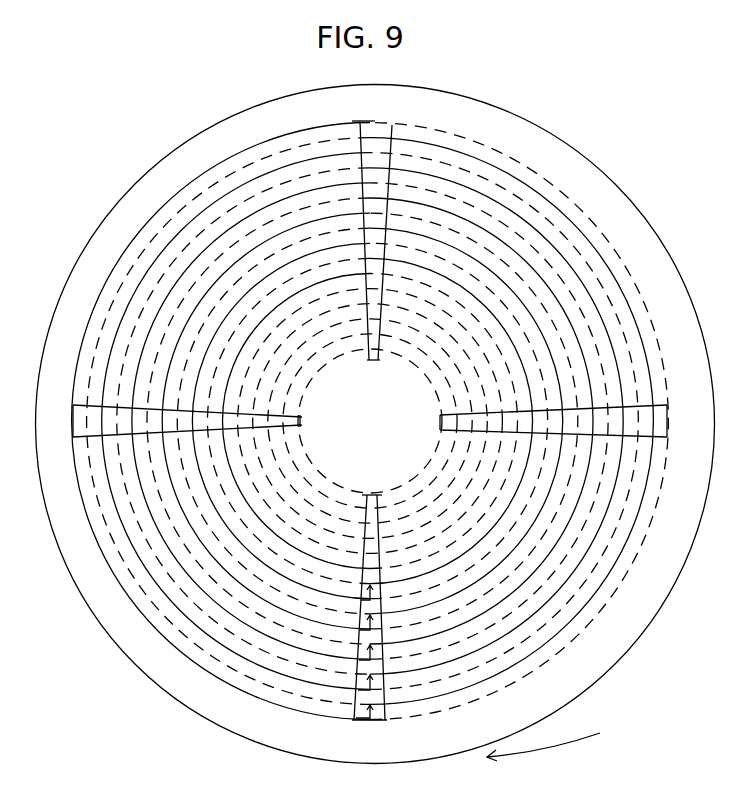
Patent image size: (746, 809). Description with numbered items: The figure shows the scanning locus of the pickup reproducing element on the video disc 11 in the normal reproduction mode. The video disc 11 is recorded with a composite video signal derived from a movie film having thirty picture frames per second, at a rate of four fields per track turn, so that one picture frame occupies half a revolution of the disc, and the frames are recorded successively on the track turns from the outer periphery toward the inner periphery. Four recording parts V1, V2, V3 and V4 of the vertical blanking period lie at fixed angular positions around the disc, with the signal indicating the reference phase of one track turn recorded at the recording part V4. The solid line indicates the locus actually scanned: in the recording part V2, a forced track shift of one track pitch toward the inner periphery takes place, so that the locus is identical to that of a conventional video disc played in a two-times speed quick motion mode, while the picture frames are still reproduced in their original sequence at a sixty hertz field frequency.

The video disc 11 is at (194, 137).
The recording part of the vertical blanking period V1 is at (68, 400).
The recording part of the vertical blanking period V2 is at (348, 726).
The recording part of the vertical blanking period V3 is at (672, 400).
The recording part of the vertical blanking period V4 is at (352, 113).